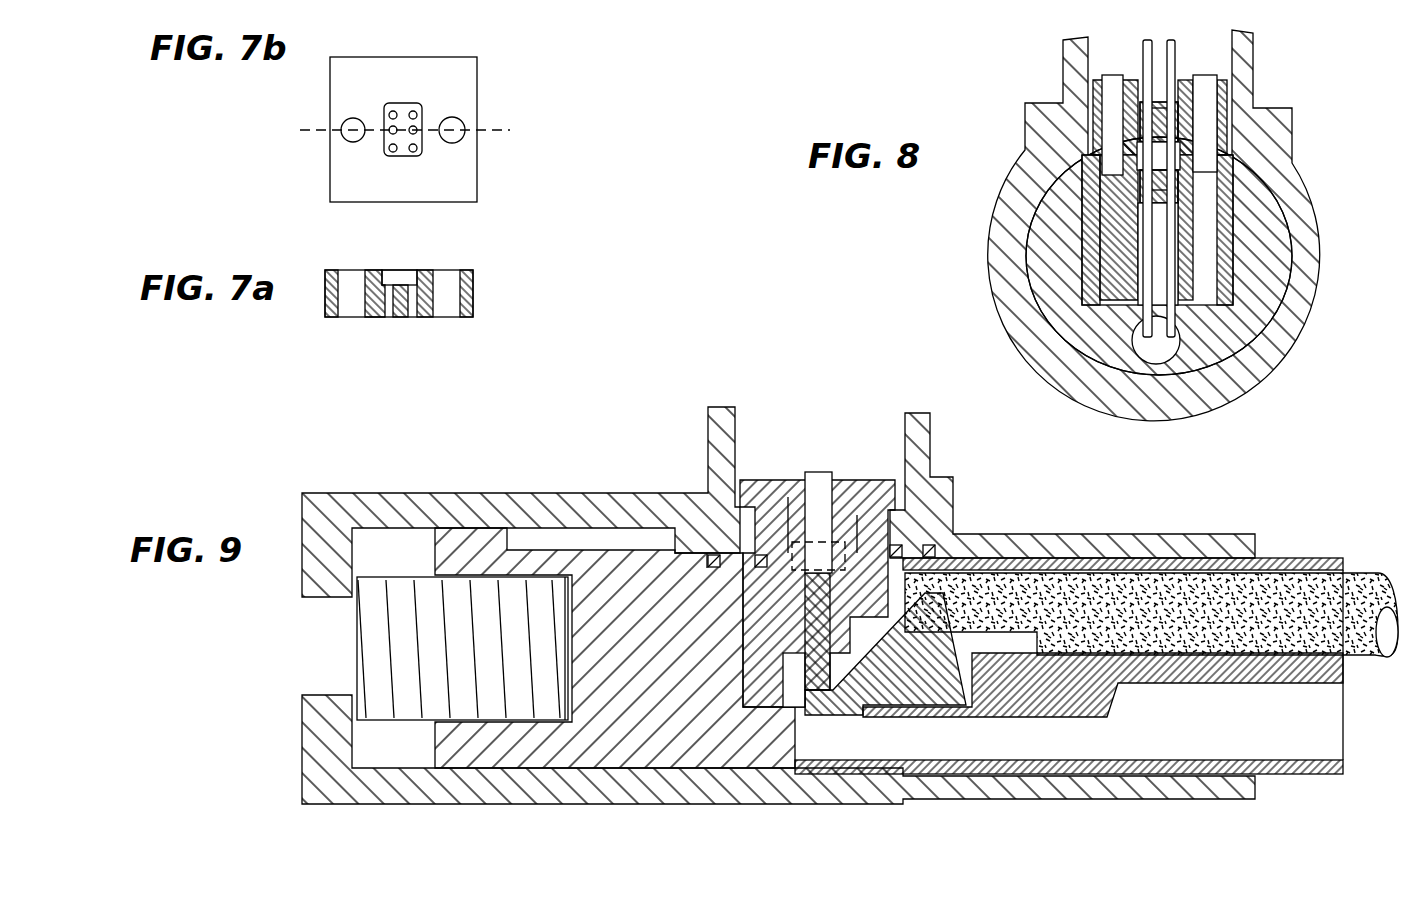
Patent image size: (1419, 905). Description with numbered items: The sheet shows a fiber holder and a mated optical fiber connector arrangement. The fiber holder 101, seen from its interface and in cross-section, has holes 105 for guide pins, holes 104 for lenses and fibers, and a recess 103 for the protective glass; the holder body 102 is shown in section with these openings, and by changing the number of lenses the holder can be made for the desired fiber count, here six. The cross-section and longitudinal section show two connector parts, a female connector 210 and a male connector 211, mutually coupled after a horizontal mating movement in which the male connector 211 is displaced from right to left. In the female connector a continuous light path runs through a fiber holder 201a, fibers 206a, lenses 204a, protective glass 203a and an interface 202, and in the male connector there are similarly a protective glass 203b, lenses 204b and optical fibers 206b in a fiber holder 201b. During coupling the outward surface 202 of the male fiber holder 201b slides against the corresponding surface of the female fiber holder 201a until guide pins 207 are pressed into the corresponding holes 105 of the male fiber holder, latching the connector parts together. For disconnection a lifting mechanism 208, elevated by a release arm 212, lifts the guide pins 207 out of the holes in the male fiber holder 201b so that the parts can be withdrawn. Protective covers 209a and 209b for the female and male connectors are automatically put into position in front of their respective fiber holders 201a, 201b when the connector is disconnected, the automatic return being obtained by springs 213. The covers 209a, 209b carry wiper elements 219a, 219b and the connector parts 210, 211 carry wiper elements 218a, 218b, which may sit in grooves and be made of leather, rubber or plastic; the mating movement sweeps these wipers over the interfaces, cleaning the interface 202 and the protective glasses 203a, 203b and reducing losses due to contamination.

In FIG. 7b, the fiber holder 101 is at (448, 90).
In FIG. 7a, the base body 102 is at (432, 270).
In FIG. 7a, the recess 103 is at (397, 278).
In FIG. 7a, the holes for lenses and fibers 104 is at (407, 310).
In FIG. 7b, the holes for guide pins 105 is at (452, 124).
In FIG. 8, the female fiber holder 201a is at (1183, 125).
In FIG. 9, the female fiber holder 201a is at (788, 497).
In FIG. 8, the male fiber holder 201b is at (1148, 190).
In FIG. 9, the male fiber holder 201b is at (857, 515).
In FIG. 8, the interface 202 is at (1167, 153).
In FIG. 9, the interface 202 is at (872, 510).
In FIG. 8, the protective glass 203a is at (1167, 147).
In FIG. 8, the protective glass 203b is at (1167, 163).
In FIG. 8, the lenses 204a is at (1153, 110).
In FIG. 8, the lenses 204b is at (1153, 192).
In FIG. 8, the fibers 206a is at (1168, 67).
In FIG. 8, the optical fibers 206b is at (1168, 299).
In FIG. 8, the guide pins 207 is at (1110, 113).
In FIG. 9, the guide pins 207 is at (818, 500).
In FIG. 8, the lifting mechanism 208 is at (1108, 208).
In FIG. 9, the lifting mechanism 208 is at (708, 500).
In FIG. 9, the protective cover 209a is at (705, 745).
In FIG. 9, the protective cover 209b is at (1067, 542).
In FIG. 8, the female connector 210 is at (1300, 320).
In FIG. 9, the female connector 210 is at (547, 505).
In FIG. 8, the male connector 211 is at (1088, 333).
In FIG. 9, the male connector 211 is at (772, 745).
In FIG. 9, the release arm 212 is at (1190, 600).
In FIG. 9, the springs 213 is at (463, 673).
In FIG. 9, the wiper element 218a is at (758, 553).
In FIG. 9, the wiper element 218b is at (922, 517).
In FIG. 9, the wiper element 219a is at (707, 568).
In FIG. 9, the wiper element 219b is at (935, 540).